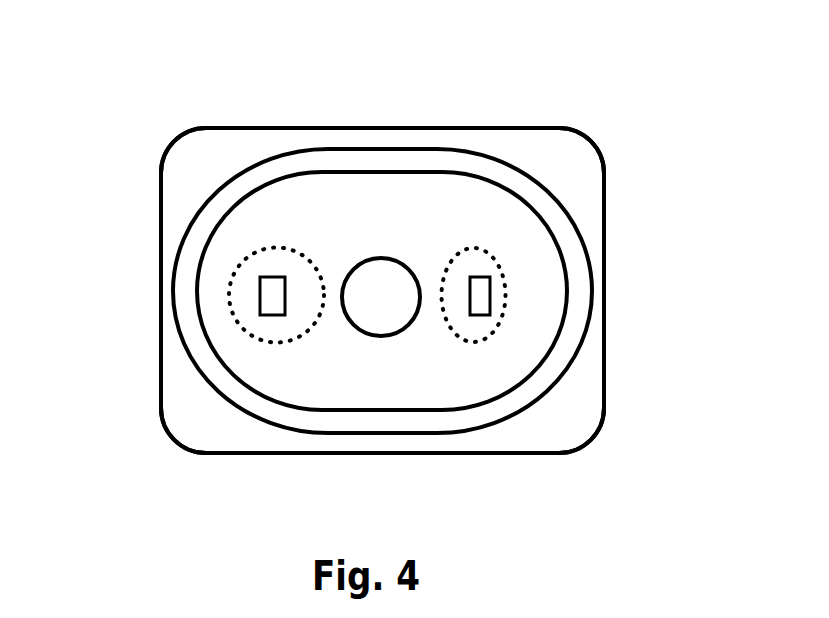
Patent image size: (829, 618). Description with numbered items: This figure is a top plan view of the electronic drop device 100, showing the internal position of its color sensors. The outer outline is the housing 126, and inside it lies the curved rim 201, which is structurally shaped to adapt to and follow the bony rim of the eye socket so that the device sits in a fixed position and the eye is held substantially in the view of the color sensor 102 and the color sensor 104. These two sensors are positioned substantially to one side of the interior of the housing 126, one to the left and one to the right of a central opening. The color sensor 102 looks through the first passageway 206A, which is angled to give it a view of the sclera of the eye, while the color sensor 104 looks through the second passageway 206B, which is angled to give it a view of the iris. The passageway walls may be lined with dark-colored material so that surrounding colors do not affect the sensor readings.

The electronic drop device 100 is at (133, 76).
The housing 126 is at (173, 175).
The curved rim 201 is at (510, 167).
The color sensor 102 is at (252, 260).
The first passageway 206A is at (259, 313).
The color sensor 104 is at (487, 258).
The second passageway 206B is at (490, 307).